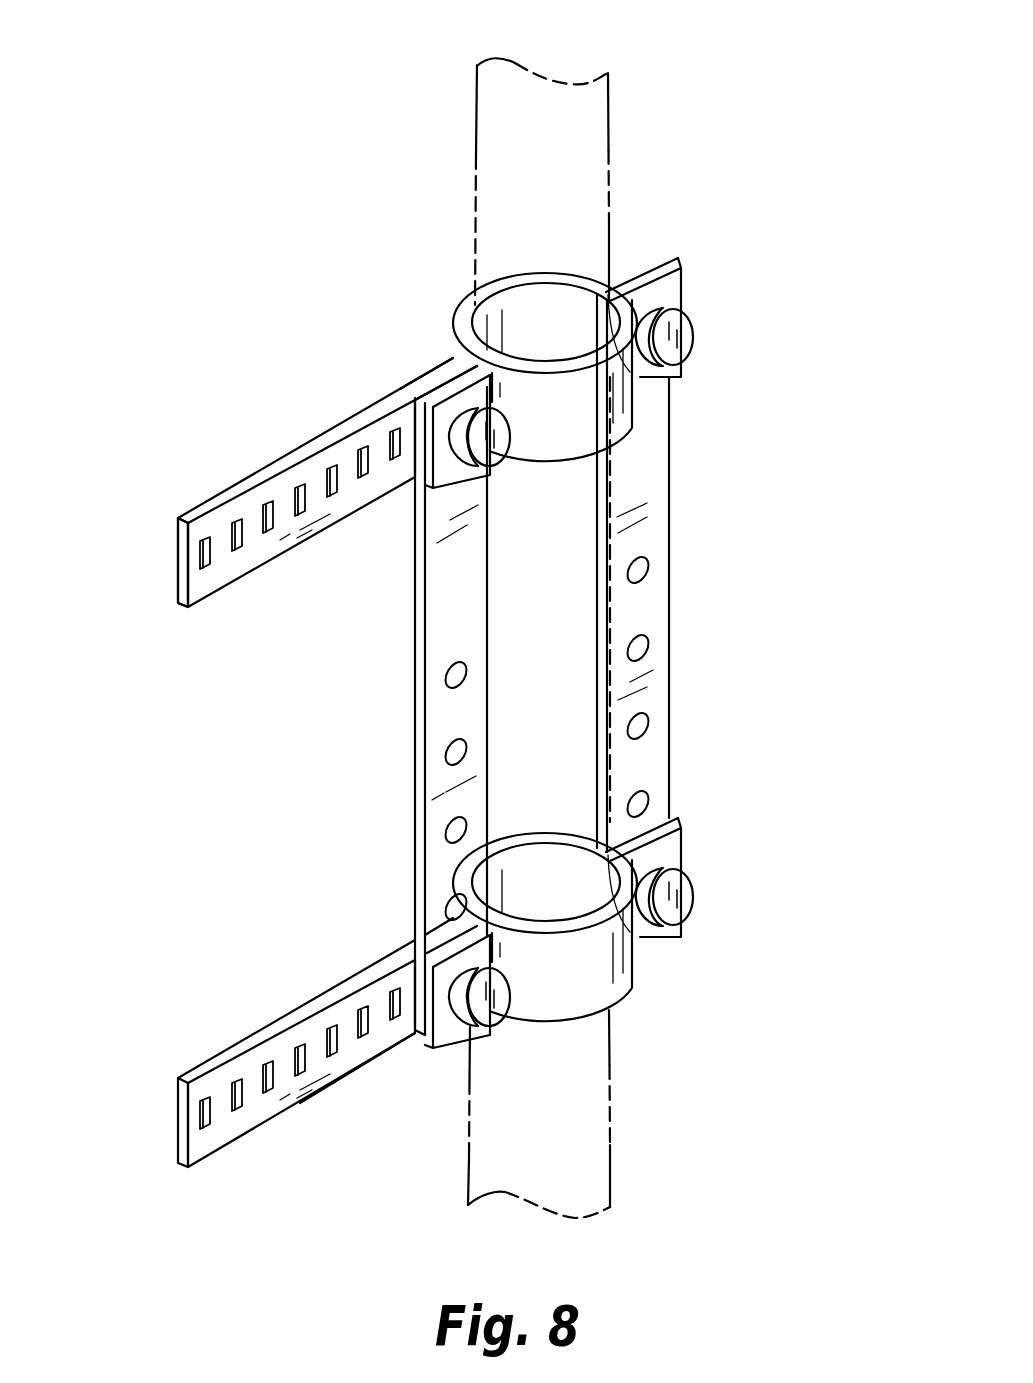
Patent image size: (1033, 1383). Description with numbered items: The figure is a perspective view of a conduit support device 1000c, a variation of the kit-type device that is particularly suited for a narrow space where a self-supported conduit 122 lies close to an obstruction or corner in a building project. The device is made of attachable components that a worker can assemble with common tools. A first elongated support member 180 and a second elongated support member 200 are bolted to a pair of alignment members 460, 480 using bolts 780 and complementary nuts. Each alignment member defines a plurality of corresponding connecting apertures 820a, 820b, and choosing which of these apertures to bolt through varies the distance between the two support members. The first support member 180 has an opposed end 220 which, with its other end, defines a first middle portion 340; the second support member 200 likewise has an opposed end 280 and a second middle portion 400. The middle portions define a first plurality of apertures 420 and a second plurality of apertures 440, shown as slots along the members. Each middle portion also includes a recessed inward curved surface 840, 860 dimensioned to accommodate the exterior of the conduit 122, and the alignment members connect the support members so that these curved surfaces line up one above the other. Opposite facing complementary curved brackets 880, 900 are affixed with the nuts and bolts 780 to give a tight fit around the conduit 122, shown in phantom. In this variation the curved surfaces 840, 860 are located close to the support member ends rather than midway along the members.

The conduit support device 1000c is at (156, 76).
The self-supported conduit 122 is at (477, 136).
The first elongated support member 180 is at (328, 432).
The second elongated support member 200 is at (316, 997).
The opposed end 220 is at (200, 498).
The first middle portion 340 is at (414, 378).
The second middle portion 400 is at (382, 1046).
The first plurality of apertures 420 is at (238, 552).
The second plurality of apertures 440 is at (238, 1112).
The alignment member 460 is at (435, 605).
The alignment member 480 is at (669, 455).
The connecting apertures 820a is at (450, 758).
The connecting apertures 820b is at (652, 715).
The inward curved surface 840 is at (520, 312).
The inward curved surface 860 is at (533, 873).
The complementary curved bracket 880 is at (595, 413).
The complementary curved bracket 900 is at (595, 988).
The opposed end 280 is at (675, 833).
The bolt 780 is at (680, 903).